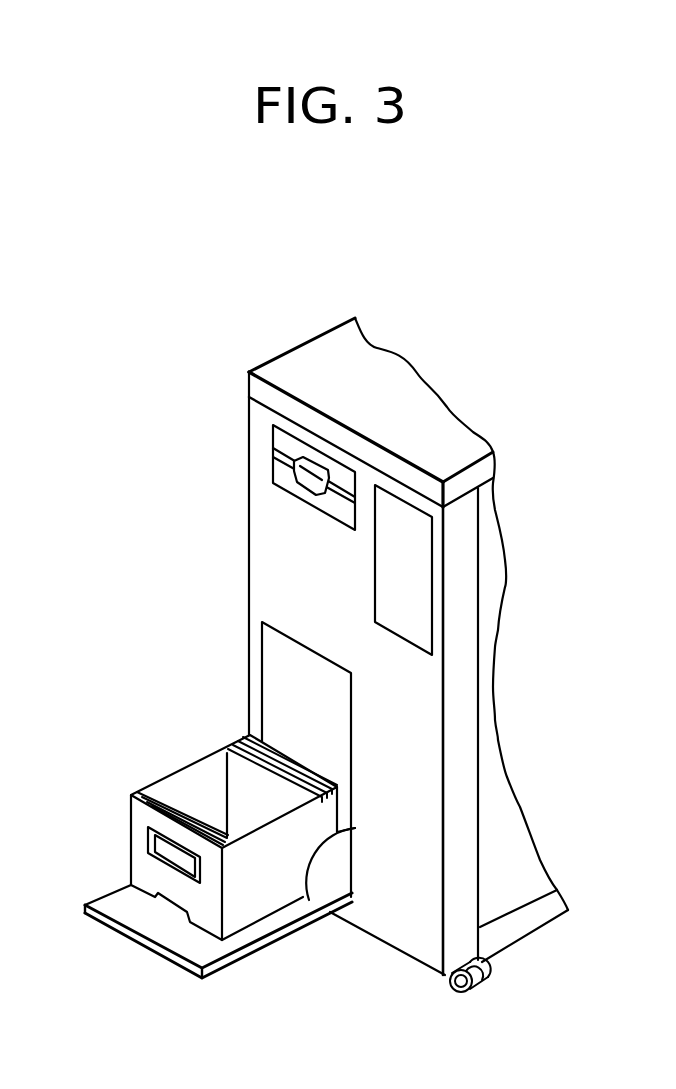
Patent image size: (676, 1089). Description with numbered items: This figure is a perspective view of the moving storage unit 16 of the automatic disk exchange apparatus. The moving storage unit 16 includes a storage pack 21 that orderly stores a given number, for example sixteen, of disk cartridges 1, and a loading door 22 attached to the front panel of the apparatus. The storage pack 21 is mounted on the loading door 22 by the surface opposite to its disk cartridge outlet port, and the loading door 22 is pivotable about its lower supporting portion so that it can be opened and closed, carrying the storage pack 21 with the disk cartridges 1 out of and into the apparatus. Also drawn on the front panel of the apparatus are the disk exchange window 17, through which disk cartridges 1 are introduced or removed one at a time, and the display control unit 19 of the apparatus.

The disk cartridge 1 is at (173, 792).
The moving storage unit 16 is at (305, 932).
The disk exchange window 17 is at (272, 466).
The display control unit 19 is at (433, 572).
The storage pack 21 is at (131, 826).
The loading door 22 is at (100, 918).